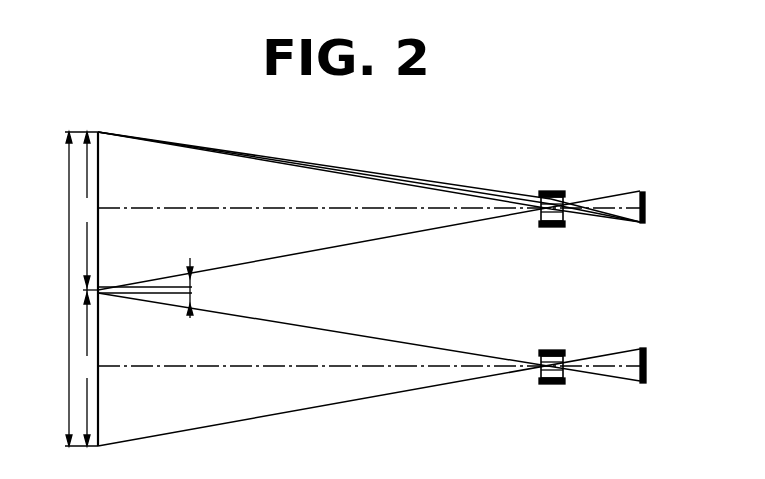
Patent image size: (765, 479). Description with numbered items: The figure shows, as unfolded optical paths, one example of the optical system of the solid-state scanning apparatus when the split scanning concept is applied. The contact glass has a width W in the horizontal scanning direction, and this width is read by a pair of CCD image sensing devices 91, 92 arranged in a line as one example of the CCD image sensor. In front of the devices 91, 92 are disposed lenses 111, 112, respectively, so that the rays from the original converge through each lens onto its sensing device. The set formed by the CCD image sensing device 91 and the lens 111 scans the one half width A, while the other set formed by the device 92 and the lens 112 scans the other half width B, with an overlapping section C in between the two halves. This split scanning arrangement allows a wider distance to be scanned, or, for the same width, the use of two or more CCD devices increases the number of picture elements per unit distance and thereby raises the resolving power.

The lens 112 is at (551, 190).
The lens 111 is at (553, 349).
The CCD image sensing device 92 is at (646, 211).
The CCD image sensing device 91 is at (647, 372).
The other half width B is at (86, 209).
The one half width A is at (87, 369).
The width W is at (72, 290).
The overlapping section C is at (200, 288).